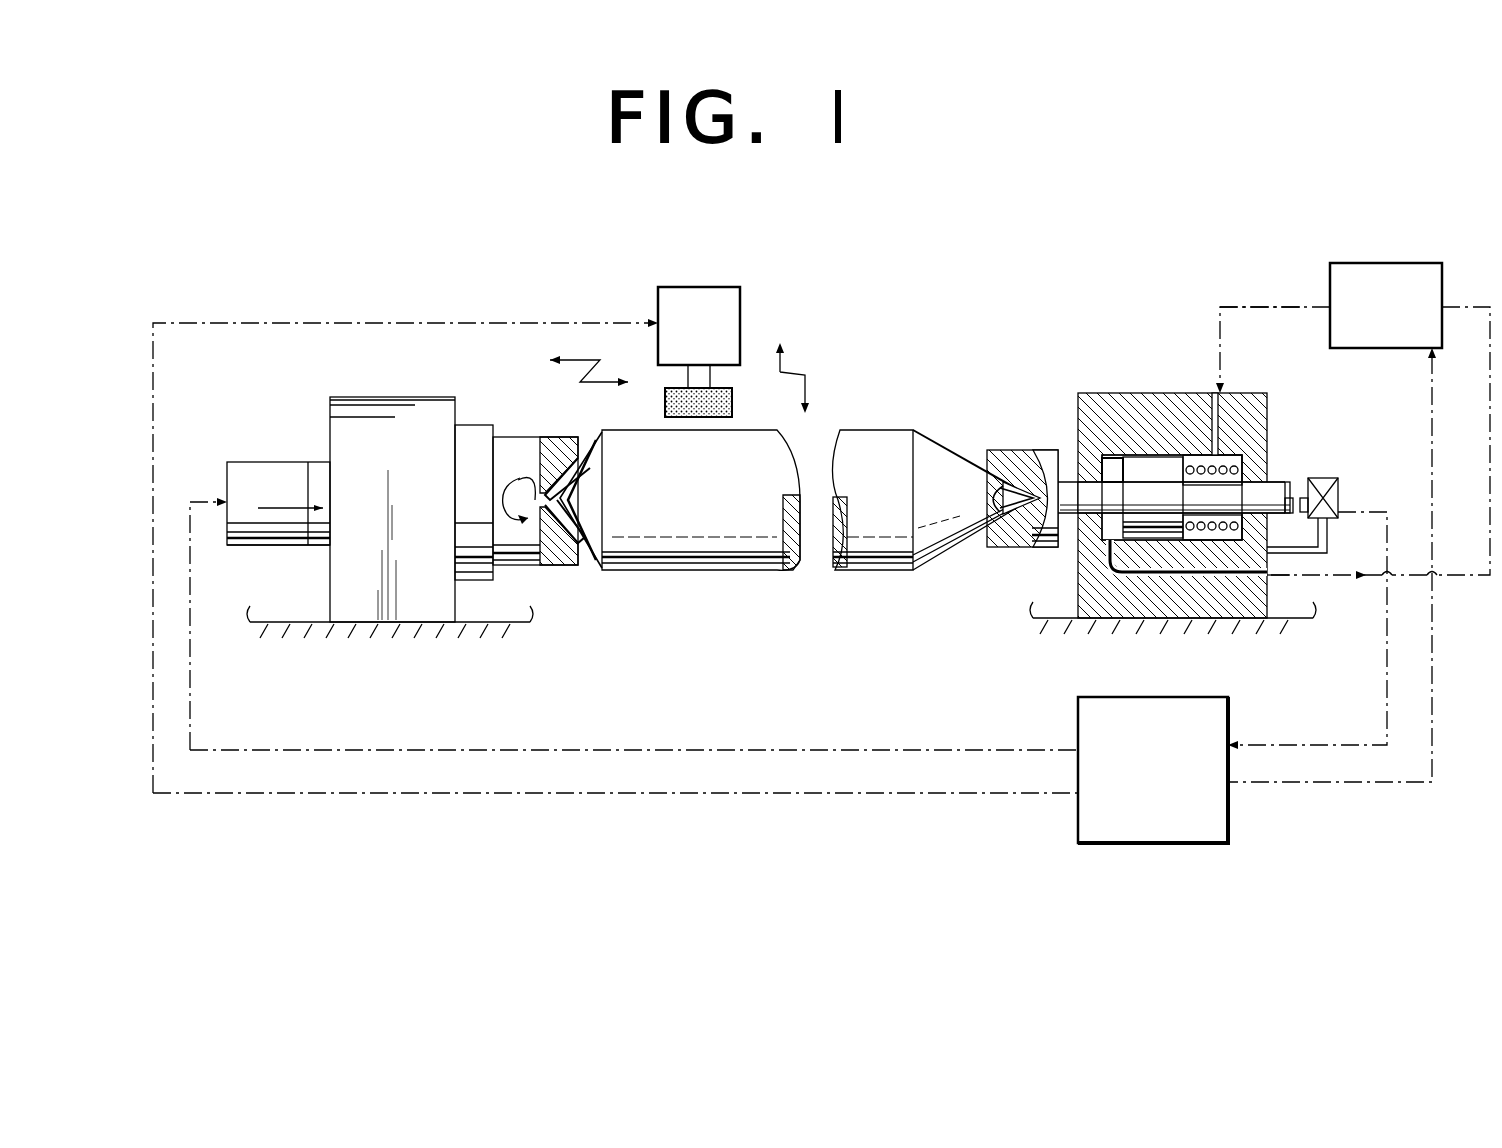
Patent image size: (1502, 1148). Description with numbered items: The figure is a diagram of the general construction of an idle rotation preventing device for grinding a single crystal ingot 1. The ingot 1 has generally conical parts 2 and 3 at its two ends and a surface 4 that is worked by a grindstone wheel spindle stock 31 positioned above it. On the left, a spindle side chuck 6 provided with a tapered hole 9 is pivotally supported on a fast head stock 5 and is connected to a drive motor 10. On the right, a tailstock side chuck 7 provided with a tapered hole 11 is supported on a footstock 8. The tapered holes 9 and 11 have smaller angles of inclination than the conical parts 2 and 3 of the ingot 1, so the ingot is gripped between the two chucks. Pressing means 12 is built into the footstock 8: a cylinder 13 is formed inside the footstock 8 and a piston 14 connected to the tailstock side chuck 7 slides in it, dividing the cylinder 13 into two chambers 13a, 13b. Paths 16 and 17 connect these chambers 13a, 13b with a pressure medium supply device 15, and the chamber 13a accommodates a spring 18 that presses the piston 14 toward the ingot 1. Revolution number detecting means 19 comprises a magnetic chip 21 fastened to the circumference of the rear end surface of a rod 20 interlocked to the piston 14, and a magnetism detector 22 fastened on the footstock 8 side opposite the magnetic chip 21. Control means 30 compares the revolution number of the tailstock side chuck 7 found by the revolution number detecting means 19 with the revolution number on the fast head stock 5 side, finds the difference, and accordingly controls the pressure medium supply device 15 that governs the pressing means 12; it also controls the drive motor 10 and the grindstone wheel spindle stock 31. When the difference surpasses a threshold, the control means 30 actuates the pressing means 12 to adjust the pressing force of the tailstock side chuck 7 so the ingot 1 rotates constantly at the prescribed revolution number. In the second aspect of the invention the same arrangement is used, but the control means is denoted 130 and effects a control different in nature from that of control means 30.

The single crystal ingot 1 is at (680, 540).
The generally conical part 2 is at (612, 545).
The generally conical part 3 is at (938, 535).
The ground surface of workpiece 4 is at (757, 540).
The fast head stock 5 is at (415, 410).
The spindle side chuck 6 is at (515, 455).
The tailstock side chuck 7 is at (1046, 458).
The footstock 8 is at (1140, 410).
The tapered hole 9 is at (566, 480).
The drive motor 10 is at (268, 470).
The tapered hole 11 is at (990, 505).
The pressing means 12 is at (1290, 293).
The cylinder 13 is at (1245, 448).
The chamber 13a is at (1178, 415).
The chamber 13b is at (1105, 415).
The piston 14 is at (1155, 535).
The pressure medium supply device 15 is at (1398, 288).
The path 16 is at (1245, 412).
The path 17 is at (1110, 575).
The spring 18 is at (1278, 488).
The revolution number detecting means 19 is at (1340, 493).
The rod 20 is at (1290, 468).
The magnetic chip 21 is at (1290, 555).
The magnetism detector 22 is at (1322, 551).
The control means 30 is at (1130, 835).
The control means 130 is at (1171, 809).
The grindstone wheel spindle stock 31 is at (722, 320).